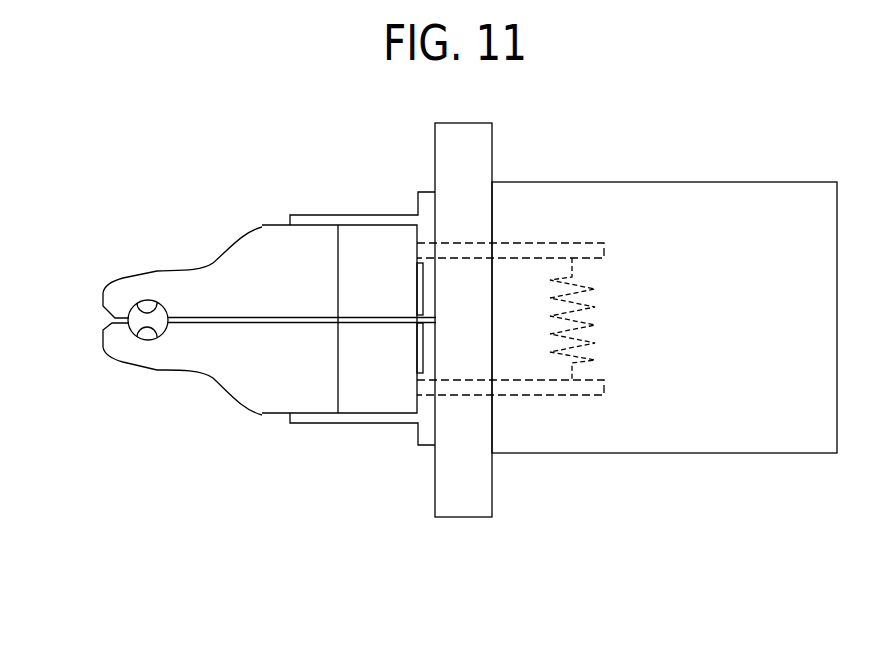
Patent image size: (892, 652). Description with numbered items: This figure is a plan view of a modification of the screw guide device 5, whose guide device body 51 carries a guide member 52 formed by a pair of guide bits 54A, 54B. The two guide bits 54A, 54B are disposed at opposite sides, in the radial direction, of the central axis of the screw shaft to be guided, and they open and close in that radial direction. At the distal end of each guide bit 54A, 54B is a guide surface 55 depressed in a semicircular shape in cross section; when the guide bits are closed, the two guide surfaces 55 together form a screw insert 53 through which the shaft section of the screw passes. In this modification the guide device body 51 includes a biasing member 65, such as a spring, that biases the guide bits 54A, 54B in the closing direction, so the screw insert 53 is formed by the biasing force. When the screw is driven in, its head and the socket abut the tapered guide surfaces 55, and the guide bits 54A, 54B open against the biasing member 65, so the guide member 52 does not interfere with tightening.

The screw guide device 5 is at (727, 182).
The guide device body 51 is at (637, 182).
The guide member 52 is at (123, 278).
The screw insert 53 is at (137, 318).
The guide bit 54A is at (217, 262).
The guide bit 54B is at (217, 378).
The guide surface 55 is at (153, 302).
The biasing member 65 is at (592, 337).